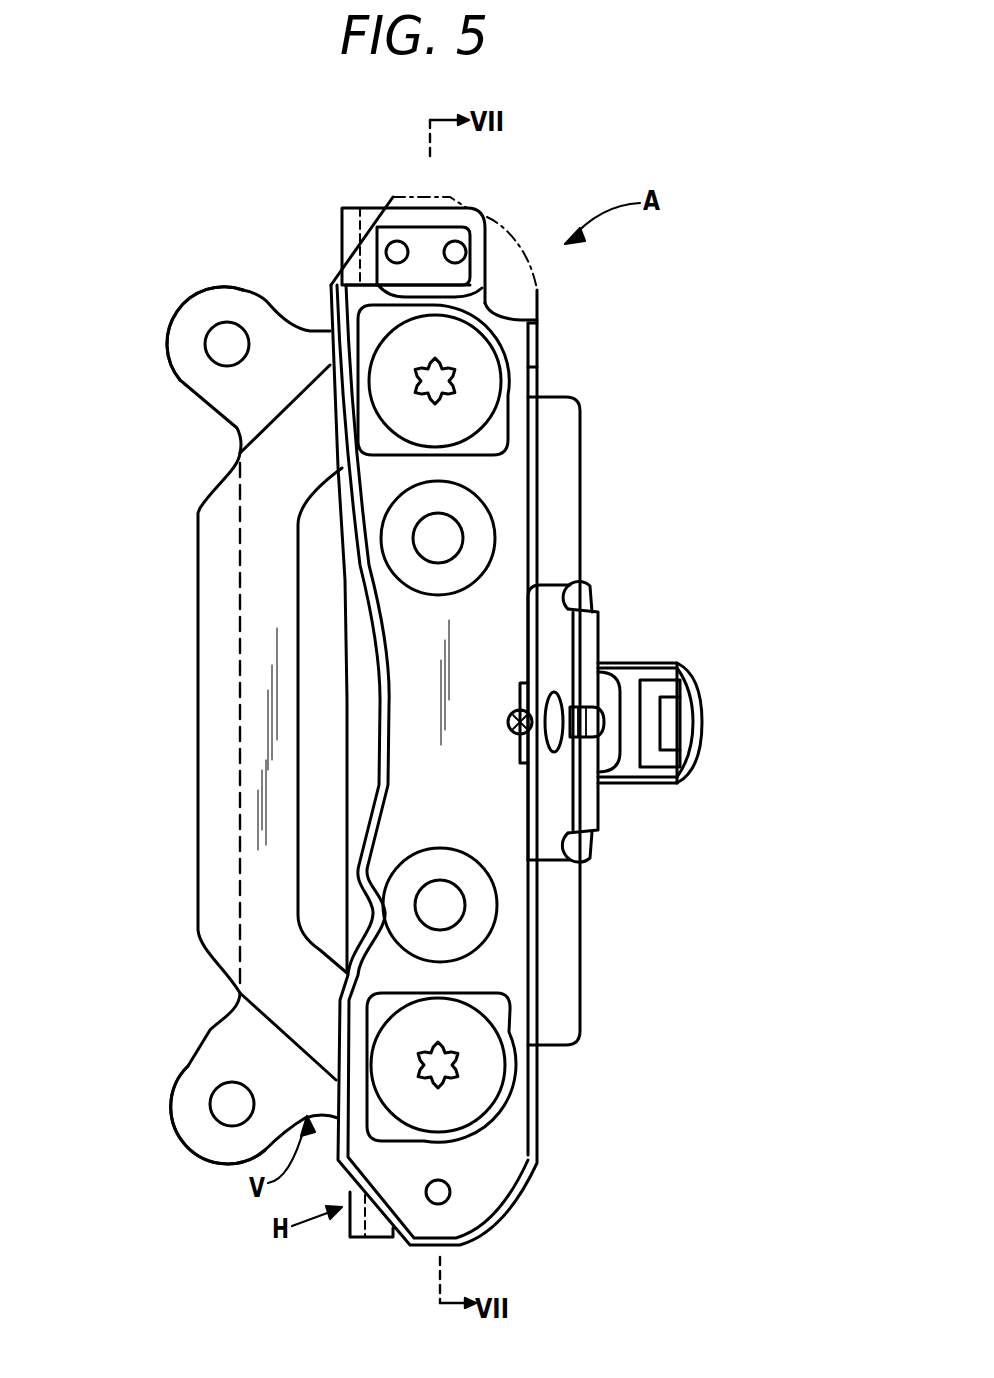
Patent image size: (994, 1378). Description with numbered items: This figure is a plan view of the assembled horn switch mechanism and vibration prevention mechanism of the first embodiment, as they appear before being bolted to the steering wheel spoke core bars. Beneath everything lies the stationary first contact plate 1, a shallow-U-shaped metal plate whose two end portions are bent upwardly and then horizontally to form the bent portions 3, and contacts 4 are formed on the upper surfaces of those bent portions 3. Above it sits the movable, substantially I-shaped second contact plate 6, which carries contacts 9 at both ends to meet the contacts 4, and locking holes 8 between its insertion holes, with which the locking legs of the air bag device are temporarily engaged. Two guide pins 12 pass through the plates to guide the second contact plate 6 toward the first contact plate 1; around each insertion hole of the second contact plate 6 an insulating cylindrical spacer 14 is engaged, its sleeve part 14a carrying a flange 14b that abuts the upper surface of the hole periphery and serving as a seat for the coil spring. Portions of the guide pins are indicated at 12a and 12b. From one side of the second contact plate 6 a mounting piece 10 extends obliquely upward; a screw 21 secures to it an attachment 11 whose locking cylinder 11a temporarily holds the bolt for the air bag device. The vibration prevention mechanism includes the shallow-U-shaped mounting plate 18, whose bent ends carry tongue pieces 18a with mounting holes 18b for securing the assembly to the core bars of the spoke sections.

The first contact plate 1 is at (208, 714).
The bent portion 3 is at (367, 217).
The contact 4 is at (442, 237).
The second contact plate 6 is at (400, 770).
The locking hole 8 is at (452, 533).
The contact 9 is at (450, 1192).
The mounting piece 10 is at (565, 633).
The attachment 11 is at (650, 689).
The locking cylinder 11a is at (627, 680).
The guide pin 12 is at (547, 723).
The bolt head 12a is at (437, 723).
The torx recess 12b is at (436, 723).
The spacer 14 is at (547, 723).
The sleeve part 14a is at (469, 723).
The flange 14b is at (500, 430).
The mounting plate 18 is at (262, 612).
The tongue piece 18a is at (223, 297).
The mounting hole 18b is at (223, 353).
The screw 21 is at (513, 737).